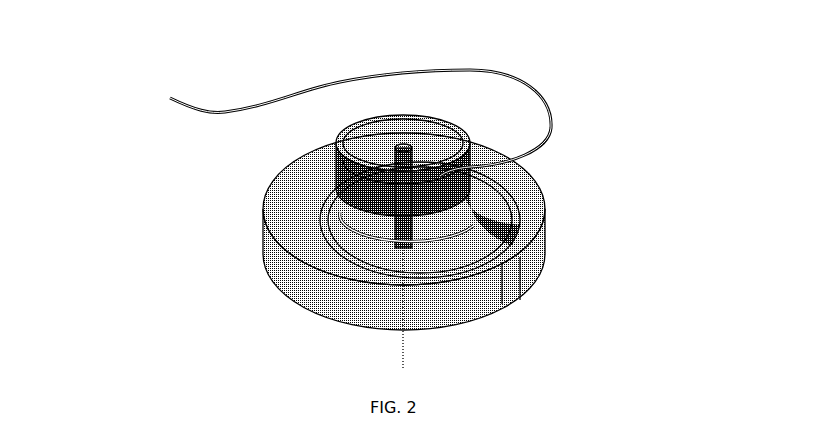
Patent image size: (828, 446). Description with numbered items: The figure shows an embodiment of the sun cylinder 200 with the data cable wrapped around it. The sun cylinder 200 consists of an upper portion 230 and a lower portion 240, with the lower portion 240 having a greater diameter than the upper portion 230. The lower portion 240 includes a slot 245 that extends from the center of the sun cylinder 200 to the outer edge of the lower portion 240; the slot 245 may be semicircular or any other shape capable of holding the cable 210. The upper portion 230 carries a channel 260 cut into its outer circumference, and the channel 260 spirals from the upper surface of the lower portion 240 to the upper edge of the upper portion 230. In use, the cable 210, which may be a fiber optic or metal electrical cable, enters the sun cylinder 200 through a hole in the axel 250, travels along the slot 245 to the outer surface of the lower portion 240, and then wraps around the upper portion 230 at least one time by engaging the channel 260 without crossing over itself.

The sun cylinder 200 is at (381, 208).
The cable 210 is at (549, 102).
The upper portion 230 is at (385, 109).
The lower portion 240 is at (300, 312).
The slot 245 is at (532, 298).
The axel 250 is at (382, 170).
The channel 260 is at (464, 202).